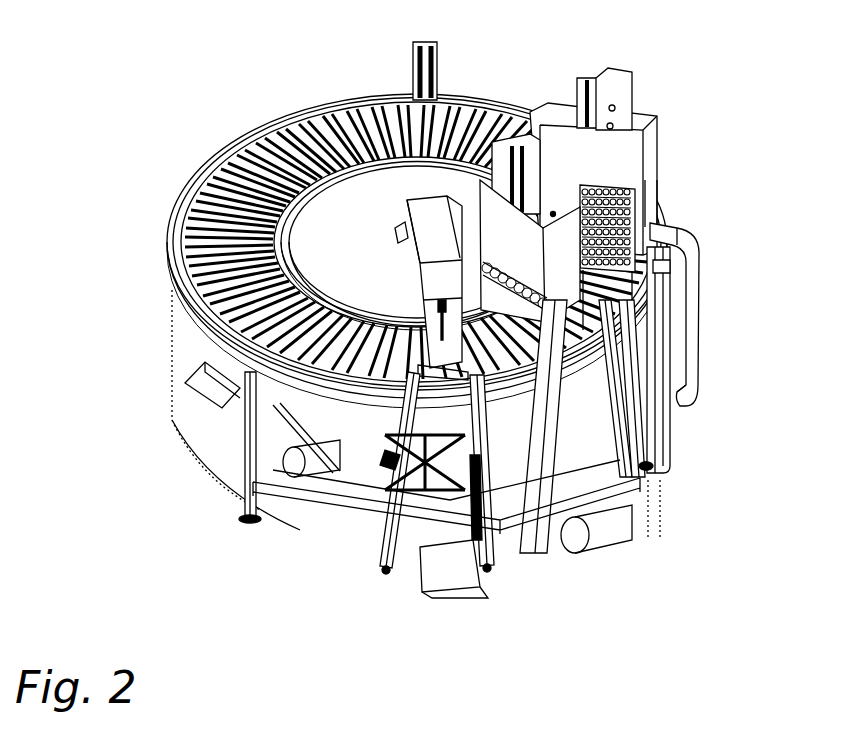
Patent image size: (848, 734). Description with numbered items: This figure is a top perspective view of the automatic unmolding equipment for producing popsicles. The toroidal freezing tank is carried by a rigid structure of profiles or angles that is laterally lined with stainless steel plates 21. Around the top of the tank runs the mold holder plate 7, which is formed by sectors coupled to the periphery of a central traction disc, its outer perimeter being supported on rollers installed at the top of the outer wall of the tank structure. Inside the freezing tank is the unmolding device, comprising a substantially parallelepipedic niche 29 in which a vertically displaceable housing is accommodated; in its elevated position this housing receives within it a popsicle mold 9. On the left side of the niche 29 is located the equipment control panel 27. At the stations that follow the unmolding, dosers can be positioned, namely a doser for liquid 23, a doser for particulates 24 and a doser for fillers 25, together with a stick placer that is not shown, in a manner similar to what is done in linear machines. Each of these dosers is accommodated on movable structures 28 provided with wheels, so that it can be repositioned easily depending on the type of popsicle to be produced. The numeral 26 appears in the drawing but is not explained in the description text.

The mold holder plate 7 is at (200, 175).
The popsicle mold 9 is at (432, 110).
The stainless steel plates 21 is at (200, 340).
The doser for liquid 23 is at (533, 367).
The doser for particulates 24 is at (570, 263).
The doser for fillers 25 is at (655, 158).
The support leg 26 is at (295, 425).
The equipment control panel 27 is at (215, 385).
The movable structures 28 is at (687, 405).
The niche 29 is at (340, 430).